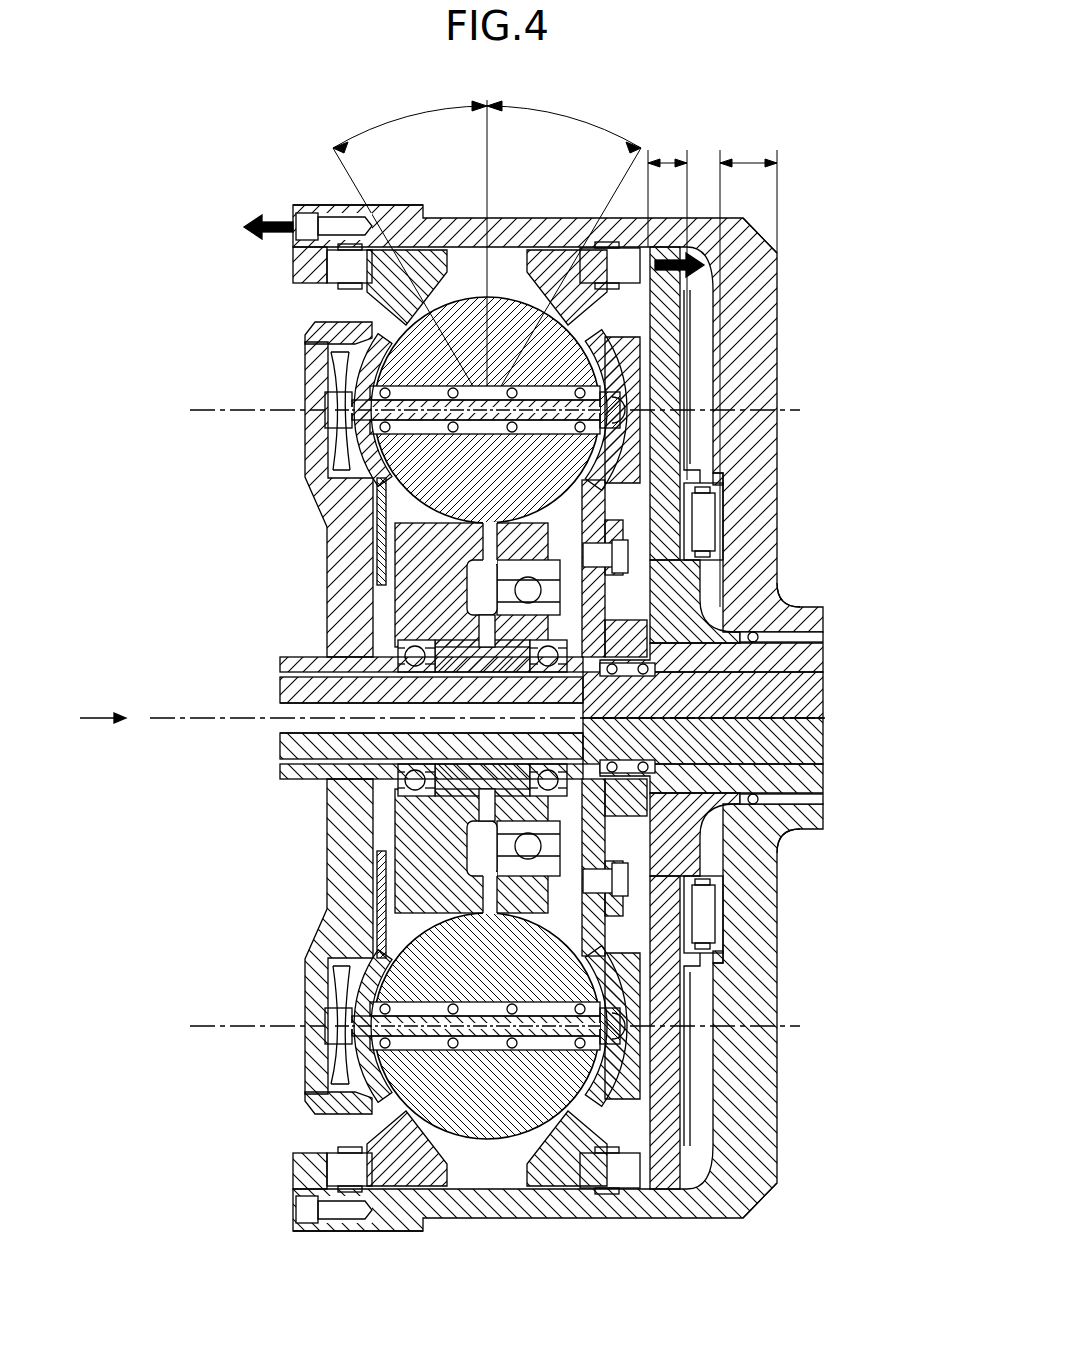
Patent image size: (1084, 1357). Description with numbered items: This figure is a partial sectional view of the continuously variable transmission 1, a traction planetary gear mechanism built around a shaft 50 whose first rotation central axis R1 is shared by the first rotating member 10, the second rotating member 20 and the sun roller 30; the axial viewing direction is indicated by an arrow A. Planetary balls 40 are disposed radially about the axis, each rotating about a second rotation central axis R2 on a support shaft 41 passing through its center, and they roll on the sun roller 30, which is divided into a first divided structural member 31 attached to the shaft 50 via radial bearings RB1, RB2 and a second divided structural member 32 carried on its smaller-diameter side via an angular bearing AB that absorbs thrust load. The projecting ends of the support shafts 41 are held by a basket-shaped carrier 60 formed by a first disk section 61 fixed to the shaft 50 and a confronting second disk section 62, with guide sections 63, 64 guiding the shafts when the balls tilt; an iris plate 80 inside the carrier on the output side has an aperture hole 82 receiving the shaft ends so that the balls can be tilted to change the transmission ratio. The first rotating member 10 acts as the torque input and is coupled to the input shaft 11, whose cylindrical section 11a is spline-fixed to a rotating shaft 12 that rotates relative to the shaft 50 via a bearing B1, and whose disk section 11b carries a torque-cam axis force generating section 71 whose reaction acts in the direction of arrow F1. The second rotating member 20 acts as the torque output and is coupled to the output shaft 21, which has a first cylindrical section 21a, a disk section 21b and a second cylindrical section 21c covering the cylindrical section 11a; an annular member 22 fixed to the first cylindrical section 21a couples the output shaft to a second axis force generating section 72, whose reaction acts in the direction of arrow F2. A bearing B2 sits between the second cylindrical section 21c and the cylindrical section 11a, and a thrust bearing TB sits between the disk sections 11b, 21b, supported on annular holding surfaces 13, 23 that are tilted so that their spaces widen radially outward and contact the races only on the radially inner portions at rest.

The continuously variable transmission 1 is at (876, 163).
The first rotating member 10 is at (553, 252).
The input shaft 11 is at (672, 325).
The cylindrical section 11a is at (824, 665).
The disk section 11b is at (700, 585).
The rotating shaft 12 is at (824, 697).
The holding surface 13 is at (700, 465).
The second rotating member 20 is at (417, 237).
The output shaft 21 is at (458, 218).
The first cylindrical section 21a is at (340, 205).
The disk section 21b is at (772, 294).
The second cylindrical section 21c is at (800, 604).
The annular member 22 is at (295, 262).
The holding surface 23 is at (727, 478).
The sun roller 30 is at (275, 520).
The first divided structural member 31 is at (430, 555).
The second divided structural member 32 is at (382, 552).
The planetary ball 40 is at (497, 297).
The support shaft 41 is at (338, 431).
The shaft 50 is at (280, 680).
The carrier 60 is at (705, 402).
The first disk section 61 is at (622, 355).
The second disk section 62 is at (385, 335).
The guide section 63 is at (612, 373).
The guide section 64 is at (362, 350).
The axis force generating section 71 is at (628, 250).
The axis force generating section 72 is at (345, 283).
The iris plate 80 is at (312, 492).
The aperture hole 82 is at (338, 463).
The arrow A is at (103, 707).
The first rotation central axis R1 is at (210, 718).
The second rotation central axis R2 is at (213, 410).
The arrow F1 is at (770, 262).
The arrow F2 is at (262, 219).
The thrust bearing TB is at (707, 522).
The angular bearing AB is at (488, 650).
The radial bearing RB1 is at (415, 672).
The radial bearing RB2 is at (545, 672).
The bearing B1 is at (625, 764).
The bearing B2 is at (824, 637).